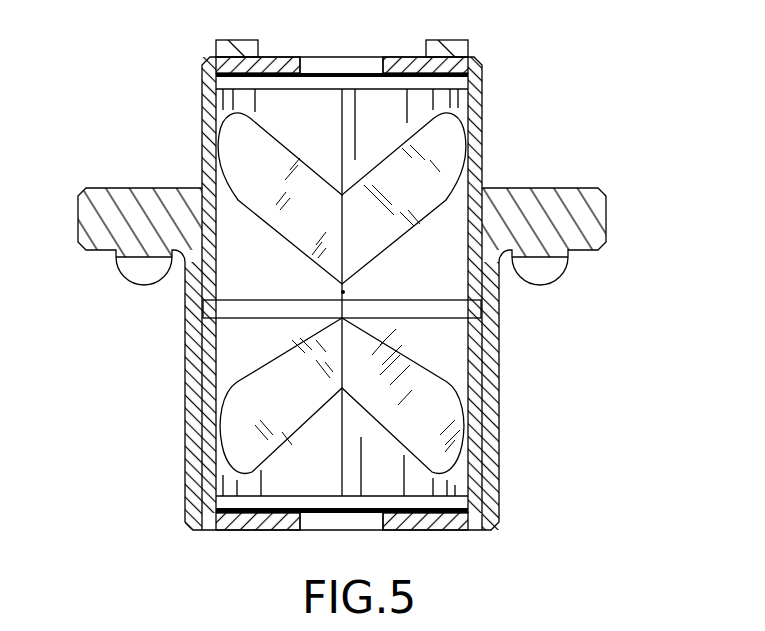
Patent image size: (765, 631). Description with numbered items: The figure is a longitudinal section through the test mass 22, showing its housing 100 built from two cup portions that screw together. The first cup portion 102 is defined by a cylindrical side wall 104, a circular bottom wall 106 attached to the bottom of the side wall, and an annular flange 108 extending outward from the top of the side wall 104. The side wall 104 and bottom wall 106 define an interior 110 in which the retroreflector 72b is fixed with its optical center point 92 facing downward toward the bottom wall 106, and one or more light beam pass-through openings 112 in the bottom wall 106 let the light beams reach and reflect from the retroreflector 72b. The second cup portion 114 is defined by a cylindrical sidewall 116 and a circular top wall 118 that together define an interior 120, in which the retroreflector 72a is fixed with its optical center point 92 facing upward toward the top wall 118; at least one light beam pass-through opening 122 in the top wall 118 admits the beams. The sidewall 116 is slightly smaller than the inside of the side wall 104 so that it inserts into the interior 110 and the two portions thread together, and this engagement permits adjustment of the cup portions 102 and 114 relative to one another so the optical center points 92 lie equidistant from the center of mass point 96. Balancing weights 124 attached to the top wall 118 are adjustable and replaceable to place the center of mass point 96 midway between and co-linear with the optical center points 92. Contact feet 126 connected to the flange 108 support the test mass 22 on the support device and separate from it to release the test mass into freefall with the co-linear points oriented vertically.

The test mass 22 is at (138, 448).
The retroreflector 72a is at (470, 174).
The retroreflector 72b is at (476, 396).
The optical center point 92 is at (342, 170).
The center of mass point 96 is at (345, 292).
The housing 100 is at (260, 544).
The first cup portion 102 is at (510, 424).
The cylindrical side wall 104 is at (185, 355).
The circular bottom wall 106 is at (440, 522).
The annular flange 108 is at (104, 188).
The interior 110 is at (458, 356).
The light beam pass-through opening 112 is at (352, 524).
The second cup portion 114 is at (499, 87).
The cylindrical sidewall 116 is at (202, 78).
The circular top wall 118 is at (403, 57).
The interior 120 is at (235, 258).
The light beam pass-through opening 122 is at (343, 65).
The balancing weights 124 is at (237, 40).
The contact feet 126 is at (117, 277).